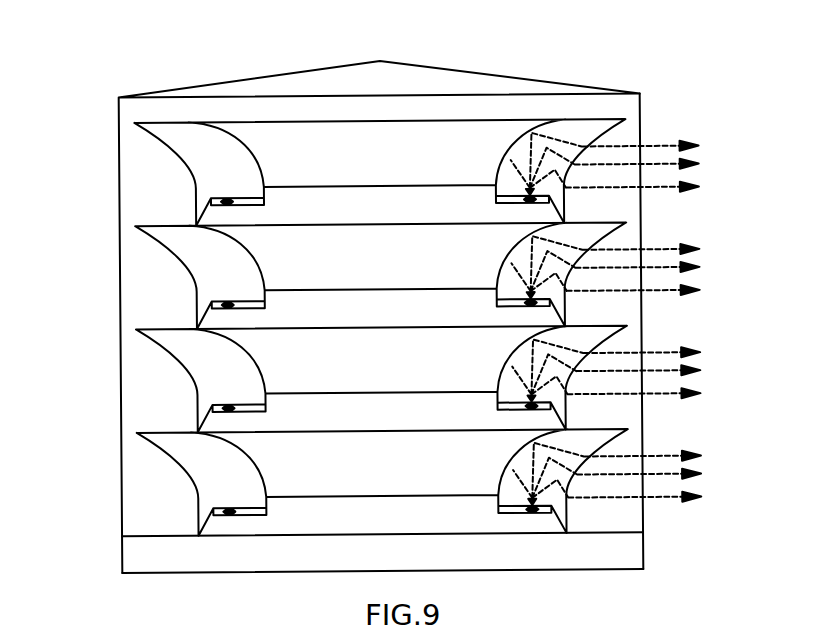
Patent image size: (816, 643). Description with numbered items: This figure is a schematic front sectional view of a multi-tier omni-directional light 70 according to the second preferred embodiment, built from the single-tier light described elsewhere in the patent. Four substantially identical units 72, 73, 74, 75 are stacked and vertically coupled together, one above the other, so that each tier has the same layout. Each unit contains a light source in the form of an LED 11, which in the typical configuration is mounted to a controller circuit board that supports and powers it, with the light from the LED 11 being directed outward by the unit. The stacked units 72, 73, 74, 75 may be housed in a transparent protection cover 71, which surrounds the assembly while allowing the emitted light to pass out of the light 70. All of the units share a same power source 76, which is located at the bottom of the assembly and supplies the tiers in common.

The omni-directional light 70 is at (267, 58).
The transparent protection cover 71 is at (642, 129).
The unit 72 is at (266, 130).
The unit 73 is at (265, 235).
The unit 74 is at (265, 338).
The unit 75 is at (266, 441).
The LED 11 is at (230, 507).
The power source 76 is at (588, 558).